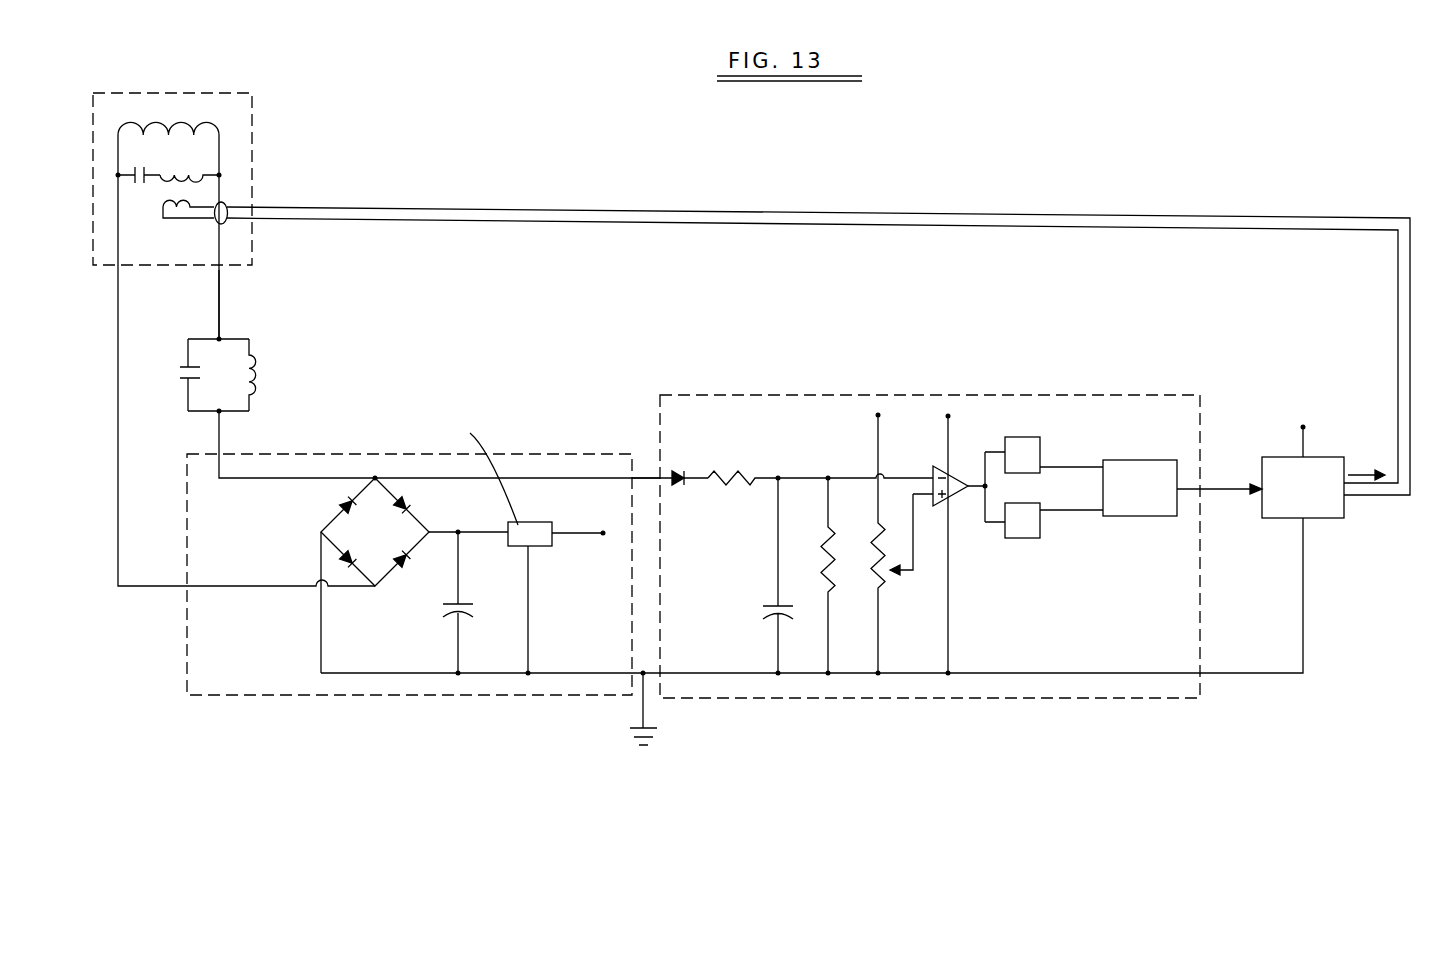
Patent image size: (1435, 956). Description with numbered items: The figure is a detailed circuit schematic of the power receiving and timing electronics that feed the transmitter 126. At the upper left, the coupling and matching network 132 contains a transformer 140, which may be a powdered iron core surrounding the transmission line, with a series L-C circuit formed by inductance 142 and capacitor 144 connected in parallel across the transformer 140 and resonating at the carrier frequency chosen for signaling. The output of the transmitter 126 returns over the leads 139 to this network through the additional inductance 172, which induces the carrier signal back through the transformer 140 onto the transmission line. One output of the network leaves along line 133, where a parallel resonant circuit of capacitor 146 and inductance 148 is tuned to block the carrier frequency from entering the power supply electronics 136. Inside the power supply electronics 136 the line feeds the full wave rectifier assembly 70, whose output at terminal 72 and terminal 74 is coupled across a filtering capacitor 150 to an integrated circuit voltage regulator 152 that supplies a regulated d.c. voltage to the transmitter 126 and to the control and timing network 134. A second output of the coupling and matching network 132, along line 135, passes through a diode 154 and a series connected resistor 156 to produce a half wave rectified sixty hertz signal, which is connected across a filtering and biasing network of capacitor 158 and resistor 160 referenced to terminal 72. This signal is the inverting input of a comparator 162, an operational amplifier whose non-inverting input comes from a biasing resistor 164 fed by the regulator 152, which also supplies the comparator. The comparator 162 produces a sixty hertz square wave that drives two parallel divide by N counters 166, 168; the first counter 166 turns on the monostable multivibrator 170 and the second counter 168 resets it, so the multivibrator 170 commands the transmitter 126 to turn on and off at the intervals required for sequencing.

The coupling and matching network 132 is at (229, 92).
The transformer 140 is at (208, 120).
The capacitor 144 is at (142, 168).
The inductance 142 is at (180, 172).
The additional inductance 172 is at (172, 183).
The leads 139 is at (583, 210).
The line 133 is at (219, 299).
The capacitor 146 is at (181, 378).
The inductance 148 is at (258, 377).
The power supply electronics 136 is at (182, 670).
The full wave rectifier assembly 70 is at (388, 540).
The terminal 72 is at (321, 532).
The terminal 74 is at (425, 532).
The filtering capacitor 150 is at (446, 611).
The integrated circuit voltage regulator 152 is at (536, 522).
The line 135 is at (646, 476).
The control and timing network 134 is at (797, 395).
The diode 154 is at (682, 473).
The resistor 156 is at (744, 474).
The capacitor 158 is at (762, 608).
The resistor 160 is at (823, 542).
The comparator 162 is at (935, 470).
The biasing resistor 164 is at (890, 584).
The divide by N counter 166 is at (1030, 437).
The divide by N counter 168 is at (1020, 538).
The monostable multivibrator 170 is at (1135, 516).
The transmitter 126 is at (1323, 461).